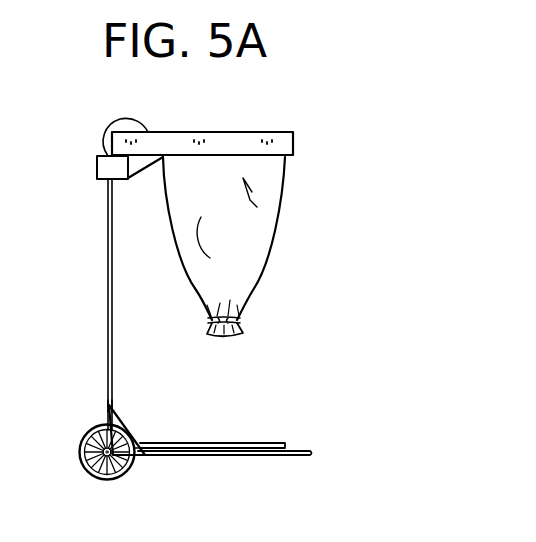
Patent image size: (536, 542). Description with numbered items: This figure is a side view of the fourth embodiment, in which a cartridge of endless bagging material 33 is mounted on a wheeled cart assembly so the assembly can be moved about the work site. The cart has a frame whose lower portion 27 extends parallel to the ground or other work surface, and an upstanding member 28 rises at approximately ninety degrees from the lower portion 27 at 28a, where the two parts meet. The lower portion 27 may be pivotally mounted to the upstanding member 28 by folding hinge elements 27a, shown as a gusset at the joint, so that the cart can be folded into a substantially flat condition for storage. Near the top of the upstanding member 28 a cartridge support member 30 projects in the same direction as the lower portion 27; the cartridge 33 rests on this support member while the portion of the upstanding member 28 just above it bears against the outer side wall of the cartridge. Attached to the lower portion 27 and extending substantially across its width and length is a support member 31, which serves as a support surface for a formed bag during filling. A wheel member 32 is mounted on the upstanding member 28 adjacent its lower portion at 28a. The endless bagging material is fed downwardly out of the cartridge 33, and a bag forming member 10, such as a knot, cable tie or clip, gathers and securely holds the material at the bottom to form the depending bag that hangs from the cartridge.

The bag forming member 10 is at (240, 320).
The lower portion 27 is at (283, 456).
The folding hinge elements 27a is at (126, 421).
The upstanding members 28 is at (107, 313).
The lower portion of upstanding member 28a is at (107, 412).
The cartridge support member 30 is at (97, 167).
The support member 31 is at (277, 442).
The wheel member 32 is at (106, 480).
The cartridge of endless bagging material 33 is at (204, 132).